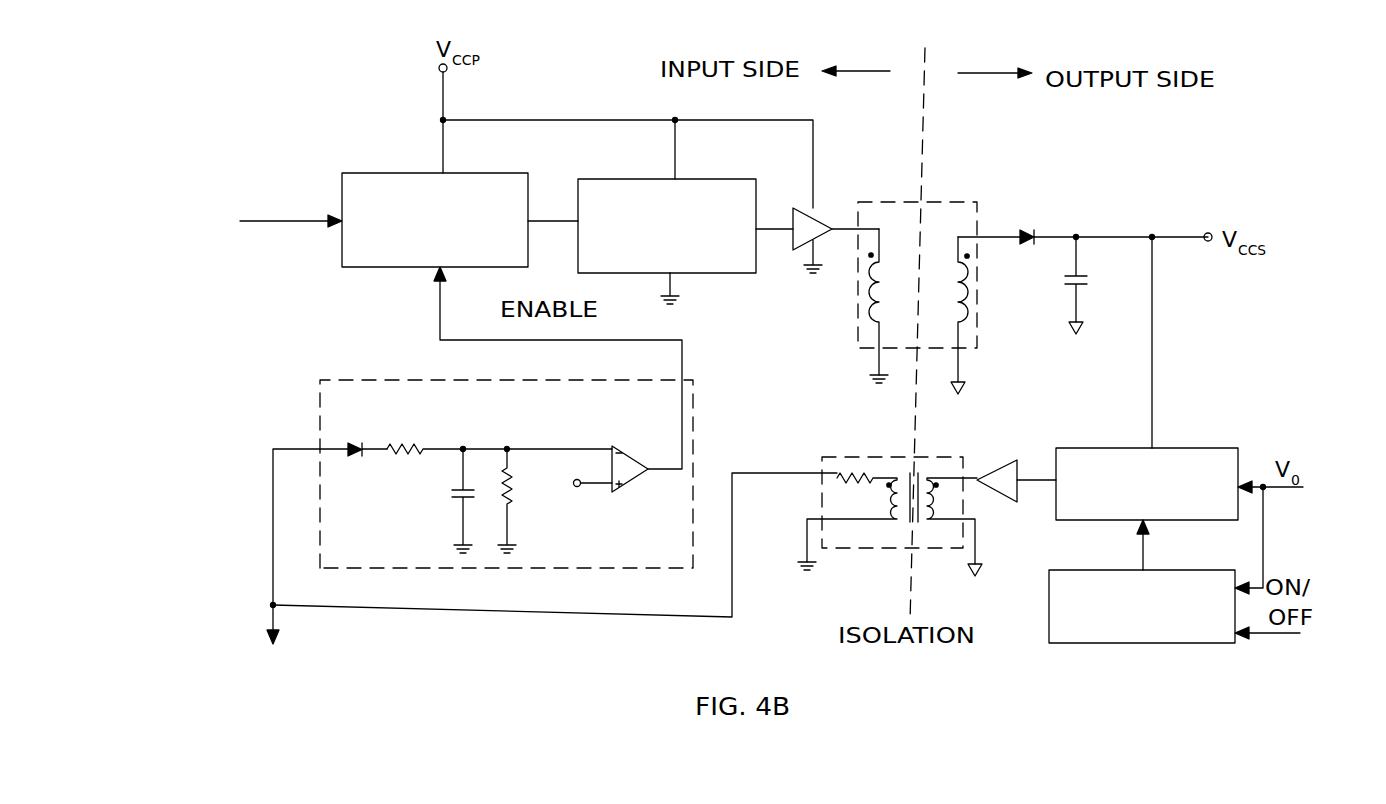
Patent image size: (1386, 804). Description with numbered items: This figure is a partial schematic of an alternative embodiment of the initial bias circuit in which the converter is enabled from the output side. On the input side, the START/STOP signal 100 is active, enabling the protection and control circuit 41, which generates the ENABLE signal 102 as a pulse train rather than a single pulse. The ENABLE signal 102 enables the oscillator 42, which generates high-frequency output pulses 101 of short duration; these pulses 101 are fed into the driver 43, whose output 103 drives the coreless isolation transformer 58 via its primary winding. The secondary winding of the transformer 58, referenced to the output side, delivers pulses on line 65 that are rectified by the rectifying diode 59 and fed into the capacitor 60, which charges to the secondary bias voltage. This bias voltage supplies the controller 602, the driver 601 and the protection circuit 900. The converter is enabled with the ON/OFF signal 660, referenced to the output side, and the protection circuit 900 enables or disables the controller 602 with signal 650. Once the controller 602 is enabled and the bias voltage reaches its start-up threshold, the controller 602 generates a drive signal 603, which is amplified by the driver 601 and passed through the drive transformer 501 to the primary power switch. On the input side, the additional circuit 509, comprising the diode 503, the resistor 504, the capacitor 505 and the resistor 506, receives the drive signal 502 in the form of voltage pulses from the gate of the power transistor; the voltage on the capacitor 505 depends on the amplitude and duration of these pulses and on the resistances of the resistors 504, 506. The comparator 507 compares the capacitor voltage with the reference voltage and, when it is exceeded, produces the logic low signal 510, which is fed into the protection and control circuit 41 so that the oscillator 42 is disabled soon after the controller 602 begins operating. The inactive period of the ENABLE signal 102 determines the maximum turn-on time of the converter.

The protection and control circuit 41 is at (392, 173).
The oscillator 42 is at (622, 179).
The driver 43 is at (794, 212).
The coreless isolation transformer 58 is at (942, 198).
The rectifying diode 59 is at (1030, 233).
The capacitor 60 is at (1080, 286).
The transformer secondary output line 65 is at (985, 236).
The START/STOP signal 100 is at (308, 222).
The output pulses 101 is at (785, 230).
The ENABLE signal 102 is at (555, 222).
The amplifier output line 103 is at (840, 228).
The drive transformer 501 is at (838, 452).
The drive signal 502 is at (290, 448).
The diode 503 is at (355, 443).
The resistor 504 is at (410, 443).
The capacitor 505 is at (462, 500).
The resistor 506 is at (510, 503).
The comparator 507 is at (624, 452).
The additional circuit 509 is at (705, 430).
The logic low signal 510 is at (683, 364).
The driver 601 is at (1004, 463).
The controller 602 is at (1188, 448).
The drive signal 603 is at (1050, 472).
The signal 650 is at (1138, 541).
The ON/OFF signal 660 is at (1275, 634).
The protection circuit 900 is at (1136, 643).